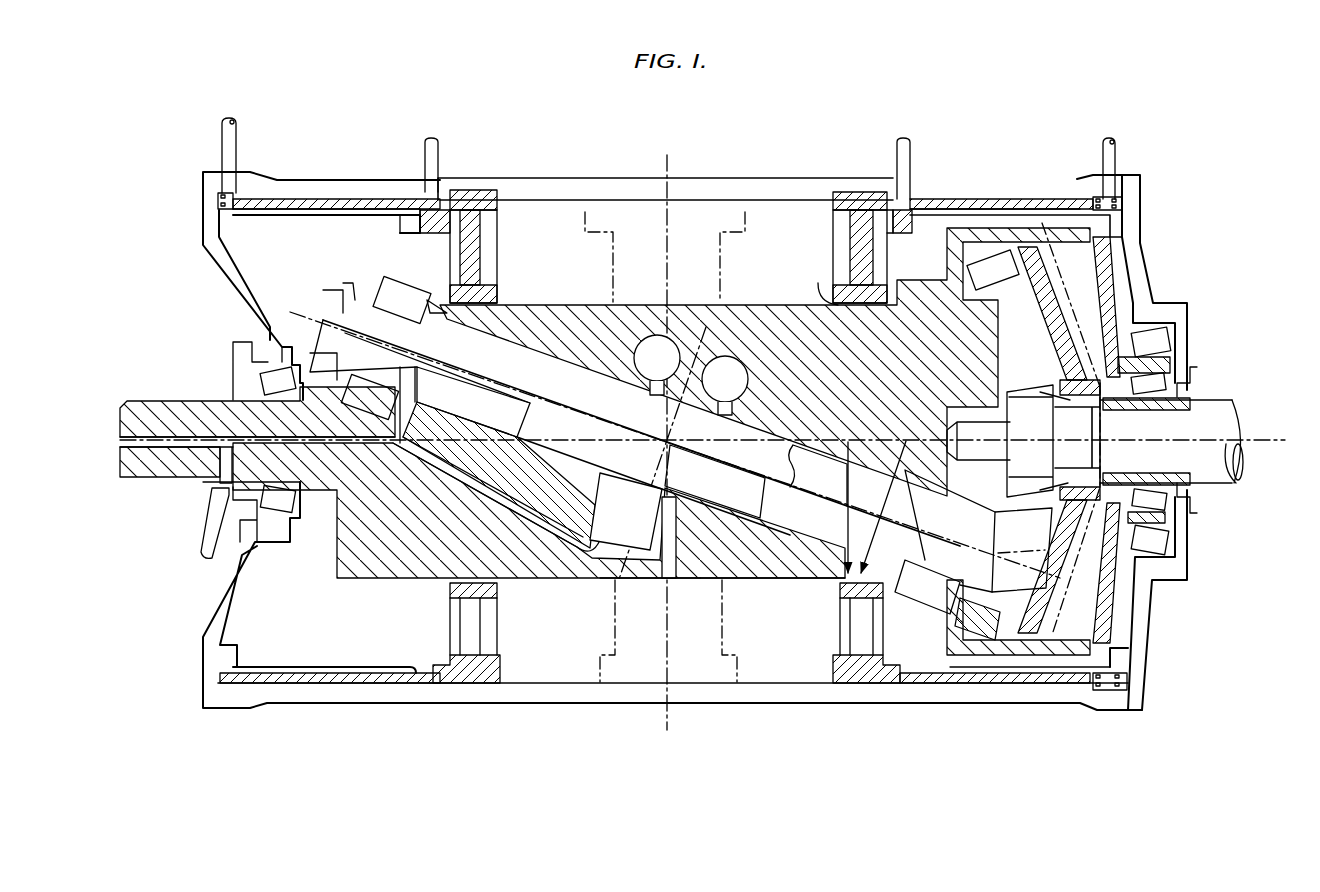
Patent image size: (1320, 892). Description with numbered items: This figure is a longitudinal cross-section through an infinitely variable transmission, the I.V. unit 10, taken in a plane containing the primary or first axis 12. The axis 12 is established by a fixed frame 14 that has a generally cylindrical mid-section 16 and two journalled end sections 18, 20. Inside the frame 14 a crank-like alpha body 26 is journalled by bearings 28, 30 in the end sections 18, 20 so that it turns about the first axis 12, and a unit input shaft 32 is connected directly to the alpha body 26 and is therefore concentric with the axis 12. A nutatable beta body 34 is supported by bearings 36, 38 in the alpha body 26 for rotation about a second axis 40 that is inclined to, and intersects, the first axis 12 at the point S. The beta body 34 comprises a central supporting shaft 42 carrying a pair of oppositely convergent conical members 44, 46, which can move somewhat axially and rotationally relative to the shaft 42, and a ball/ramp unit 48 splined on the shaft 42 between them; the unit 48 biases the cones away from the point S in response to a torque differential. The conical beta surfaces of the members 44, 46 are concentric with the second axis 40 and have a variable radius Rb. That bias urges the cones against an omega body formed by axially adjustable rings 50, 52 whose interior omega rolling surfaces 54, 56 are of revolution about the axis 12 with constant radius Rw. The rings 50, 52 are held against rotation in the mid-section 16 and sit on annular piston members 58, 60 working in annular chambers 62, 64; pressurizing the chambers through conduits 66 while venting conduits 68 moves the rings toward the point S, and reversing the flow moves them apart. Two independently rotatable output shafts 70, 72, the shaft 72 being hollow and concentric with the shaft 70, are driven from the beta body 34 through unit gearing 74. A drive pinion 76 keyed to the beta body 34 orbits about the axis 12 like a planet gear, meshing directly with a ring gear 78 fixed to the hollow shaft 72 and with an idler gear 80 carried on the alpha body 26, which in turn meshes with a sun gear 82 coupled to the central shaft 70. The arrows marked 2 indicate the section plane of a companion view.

The I.V. unit 10 is at (430, 724).
The first axis 12 is at (1258, 446).
The fixed frame 14 is at (708, 184).
The cylindrical mid-section 16 is at (605, 690).
The end section 18 is at (237, 600).
The end section 20 is at (1140, 262).
The alpha body 26 is at (400, 548).
The bearing 28 is at (290, 503).
The bearing 30 is at (1163, 540).
The unit input shaft 32 is at (165, 391).
The beta body 34 is at (733, 584).
The bearing 36 is at (398, 290).
The bearing 38 is at (937, 588).
The second axis 40 is at (482, 377).
The central supporting shaft 42 is at (600, 396).
The conical member 44 is at (543, 300).
The conical member 46 is at (813, 580).
The ball/ramp unit 48 is at (683, 330).
The axially adjustable ring 50 is at (478, 258).
The axially adjustable ring 52 is at (858, 241).
The omega rolling surface 54 is at (487, 576).
The omega rolling surface 56 is at (818, 283).
The annular piston member 58 is at (335, 212).
The annular piston member 60 is at (952, 205).
The annular chamber 62 is at (318, 198).
The annular chamber 64 is at (1000, 198).
The hydraulic fluid conduit 66 is at (238, 138).
The hydraulic fluid conduit 68 is at (438, 152).
The unit output shaft 70 is at (1158, 431).
The unit output shaft 72 is at (1180, 396).
The unit gearing 74 is at (1075, 591).
The drive pinion 76 is at (1010, 510).
The ring gear 78 is at (988, 282).
The idler gear 80 is at (1057, 514).
The sun gear 82 is at (1033, 380).
The section line 2- 2 is at (1031, 242).
The point of axes intersection S is at (672, 442).
The constant radius Rw is at (848, 490).
The variable radius Rb is at (872, 538).